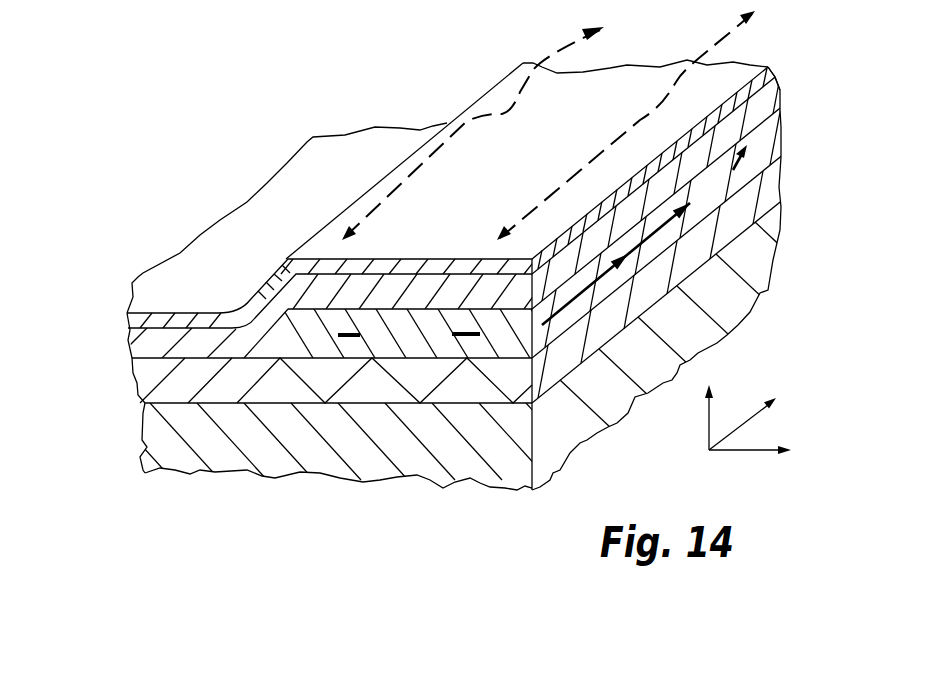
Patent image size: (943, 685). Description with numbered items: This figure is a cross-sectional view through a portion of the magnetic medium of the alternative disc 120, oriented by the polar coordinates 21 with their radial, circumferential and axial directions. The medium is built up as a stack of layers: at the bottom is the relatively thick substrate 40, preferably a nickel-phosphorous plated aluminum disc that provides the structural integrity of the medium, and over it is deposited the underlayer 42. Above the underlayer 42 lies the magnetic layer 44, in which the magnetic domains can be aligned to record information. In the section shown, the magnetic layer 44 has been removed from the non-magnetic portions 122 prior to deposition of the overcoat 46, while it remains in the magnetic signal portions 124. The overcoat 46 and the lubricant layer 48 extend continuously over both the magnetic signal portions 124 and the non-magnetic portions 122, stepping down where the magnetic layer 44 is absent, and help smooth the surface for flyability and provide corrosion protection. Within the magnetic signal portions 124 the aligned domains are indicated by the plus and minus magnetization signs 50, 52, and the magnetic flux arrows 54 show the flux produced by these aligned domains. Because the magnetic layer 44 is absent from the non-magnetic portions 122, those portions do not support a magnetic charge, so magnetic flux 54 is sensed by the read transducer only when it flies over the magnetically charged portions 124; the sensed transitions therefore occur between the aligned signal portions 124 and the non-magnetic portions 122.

The substrate 40 is at (160, 436).
The underlayer 42 is at (142, 377).
The magnetic layer 44 is at (760, 147).
The overcoat 46 is at (147, 342).
The lubricant layer 48 is at (158, 313).
The + magnetization sign 50 is at (744, 156).
The − magnetization sign 52 is at (464, 331).
The magnetic flux arrows 54 is at (556, 60).
The alternative disc 120 is at (345, 101).
The non-magnetic portions 122 is at (313, 165).
The magnetic signal portions 124 is at (720, 72).
The polar coordinates 21 is at (704, 438).